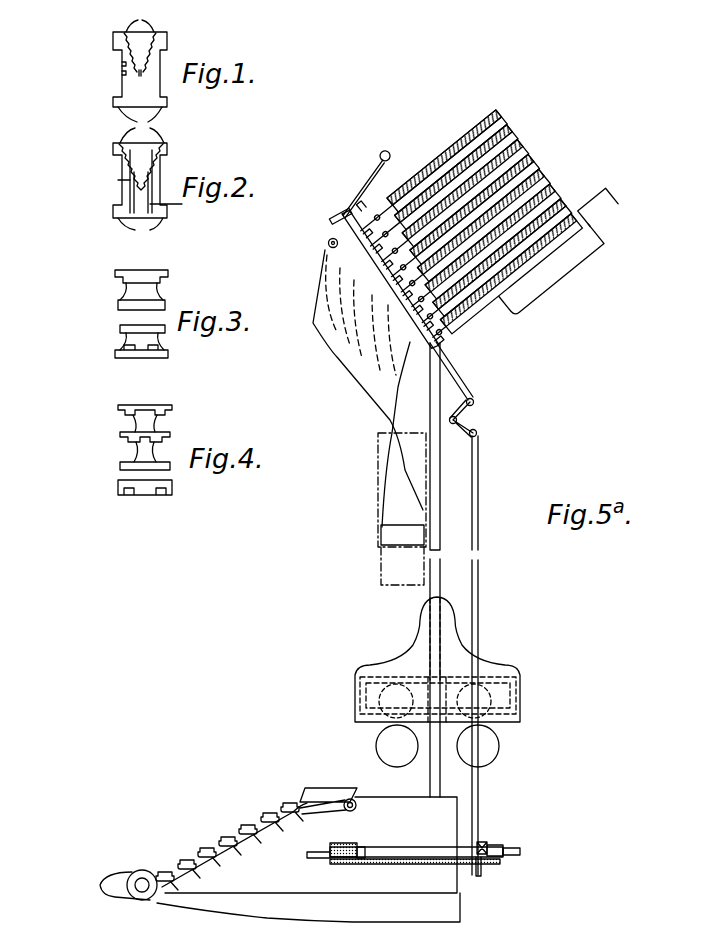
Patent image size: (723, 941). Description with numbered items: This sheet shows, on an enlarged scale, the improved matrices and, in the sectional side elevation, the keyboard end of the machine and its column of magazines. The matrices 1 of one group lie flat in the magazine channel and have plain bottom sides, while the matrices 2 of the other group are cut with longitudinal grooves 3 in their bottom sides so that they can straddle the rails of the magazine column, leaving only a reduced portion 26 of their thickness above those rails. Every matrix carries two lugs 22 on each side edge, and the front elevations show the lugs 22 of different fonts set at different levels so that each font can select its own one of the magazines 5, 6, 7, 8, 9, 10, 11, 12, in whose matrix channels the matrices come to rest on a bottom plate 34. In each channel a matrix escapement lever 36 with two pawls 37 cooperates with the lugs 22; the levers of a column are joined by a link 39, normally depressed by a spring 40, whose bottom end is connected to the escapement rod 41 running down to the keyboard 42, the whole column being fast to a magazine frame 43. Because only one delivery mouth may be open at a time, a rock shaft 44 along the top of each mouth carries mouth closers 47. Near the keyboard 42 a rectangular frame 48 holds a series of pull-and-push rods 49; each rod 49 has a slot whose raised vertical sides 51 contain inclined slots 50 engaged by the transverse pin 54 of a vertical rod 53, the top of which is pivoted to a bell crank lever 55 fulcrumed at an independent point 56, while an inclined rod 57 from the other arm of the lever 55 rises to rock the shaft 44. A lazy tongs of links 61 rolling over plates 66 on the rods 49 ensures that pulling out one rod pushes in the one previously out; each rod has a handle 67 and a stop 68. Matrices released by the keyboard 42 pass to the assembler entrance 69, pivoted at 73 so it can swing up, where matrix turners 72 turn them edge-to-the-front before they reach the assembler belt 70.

In FIG. 1, the matrix 1 is at (140, 69).
In FIG. 3, the matrix 1 is at (112, 314).
In FIG. 2, the matrix 2 is at (140, 180).
In FIG. 4, the matrix 2 is at (118, 452).
In FIG. 2, the longitudinal groove 3 is at (148, 195).
In FIG. 4, the longitudinal groove 3 is at (146, 438).
In FIG. 1, the lug 22 is at (140, 74).
In FIG. 2, the lug 22 is at (141, 182).
In FIG. 3, the lug 22 is at (142, 317).
In FIG. 4, the lug 22 is at (160, 480).
In FIG. 4, the portion of matrix thickness 26 is at (146, 408).
In FIG. 5A, the magazine 5 is at (494, 110).
In FIG. 5A, the magazine 6 is at (512, 133).
In FIG. 5A, the magazine 7 is at (522, 146).
In FIG. 5A, the magazine 8 is at (535, 161).
In FIG. 5A, the magazine 9 is at (543, 177).
In FIG. 5A, the magazine 10 is at (555, 191).
In FIG. 5A, the magazine 11 is at (567, 205).
In FIG. 5A, the magazine 12 is at (585, 219).
In FIG. 5A, the bottom plate of matrix channel 34 is at (590, 181).
In FIG. 5A, the matrix escapement lever 36 is at (472, 323).
In FIG. 5A, the pawl 37 is at (376, 182).
In FIG. 5A, the link 39 is at (336, 218).
In FIG. 5A, the spring 40 is at (356, 192).
In FIG. 5A, the escapement rod 41 is at (431, 382).
In FIG. 5A, the keyboard 42 is at (280, 859).
In FIG. 5A, the magazine frame 43 is at (578, 268).
In FIG. 5A, the rock shaft 44 is at (364, 282).
In FIG. 5A, the mouth closer 47 is at (385, 312).
In FIG. 5A, the rectangular frame 48 is at (482, 870).
In FIG. 5A, the pull-and-push rod 49 is at (430, 848).
In FIG. 5A, the inclined slot 50 is at (500, 846).
In FIG. 5A, the raised vertical side 51 is at (520, 851).
In FIG. 5A, the vertical rod 53 is at (480, 783).
In FIG. 5A, the transverse pin 54 is at (488, 845).
In FIG. 5A, the bell crank lever 55 is at (476, 410).
In FIG. 5A, the fulcrum point 56 is at (452, 425).
In FIG. 5A, the inclined rod 57 is at (463, 367).
In FIG. 5A, the link 61 is at (348, 843).
In FIG. 5A, the plate 66 is at (364, 847).
In FIG. 5A, the handle 67 is at (318, 862).
In FIG. 5A, the stop 68 is at (332, 848).
In FIG. 5A, the assembler entrance 69 is at (368, 388).
In FIG. 5A, the assembler belt 70 is at (382, 562).
In FIG. 5A, the matrix turner 72 is at (398, 440).
In FIG. 5A, the pivot 73 is at (328, 244).